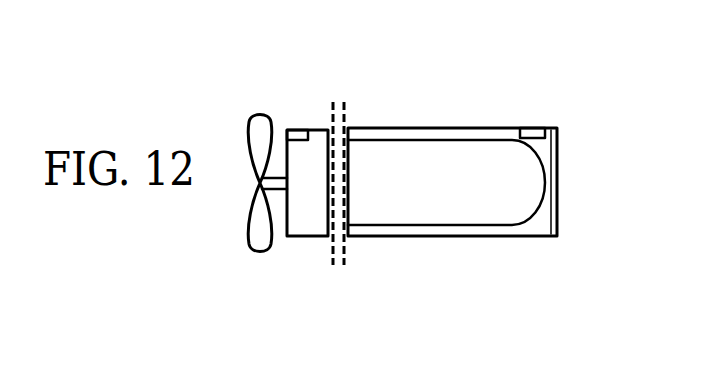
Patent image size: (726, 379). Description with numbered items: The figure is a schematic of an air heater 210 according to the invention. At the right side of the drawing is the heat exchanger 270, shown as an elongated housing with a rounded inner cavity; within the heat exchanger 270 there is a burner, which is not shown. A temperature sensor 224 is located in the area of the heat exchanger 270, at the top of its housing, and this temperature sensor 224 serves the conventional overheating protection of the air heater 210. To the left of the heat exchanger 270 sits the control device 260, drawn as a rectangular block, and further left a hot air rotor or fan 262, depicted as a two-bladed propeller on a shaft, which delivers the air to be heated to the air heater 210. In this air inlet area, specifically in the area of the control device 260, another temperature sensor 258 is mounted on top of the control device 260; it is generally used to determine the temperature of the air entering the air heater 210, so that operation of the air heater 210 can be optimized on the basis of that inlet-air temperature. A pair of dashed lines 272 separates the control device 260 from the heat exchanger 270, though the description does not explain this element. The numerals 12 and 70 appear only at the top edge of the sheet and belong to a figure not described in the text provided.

The infant sleep aid device 12 is at (167, 21).
The housing 70 is at (55, 20).
The air heater 210 is at (432, 109).
The temperature sensor 224 is at (533, 128).
The temperature sensor 258 is at (296, 129).
The control device 260 is at (305, 226).
The hot air rotor or fan 262 is at (250, 228).
The heat exchanger 270 is at (495, 207).
The partition wall 272 is at (350, 253).